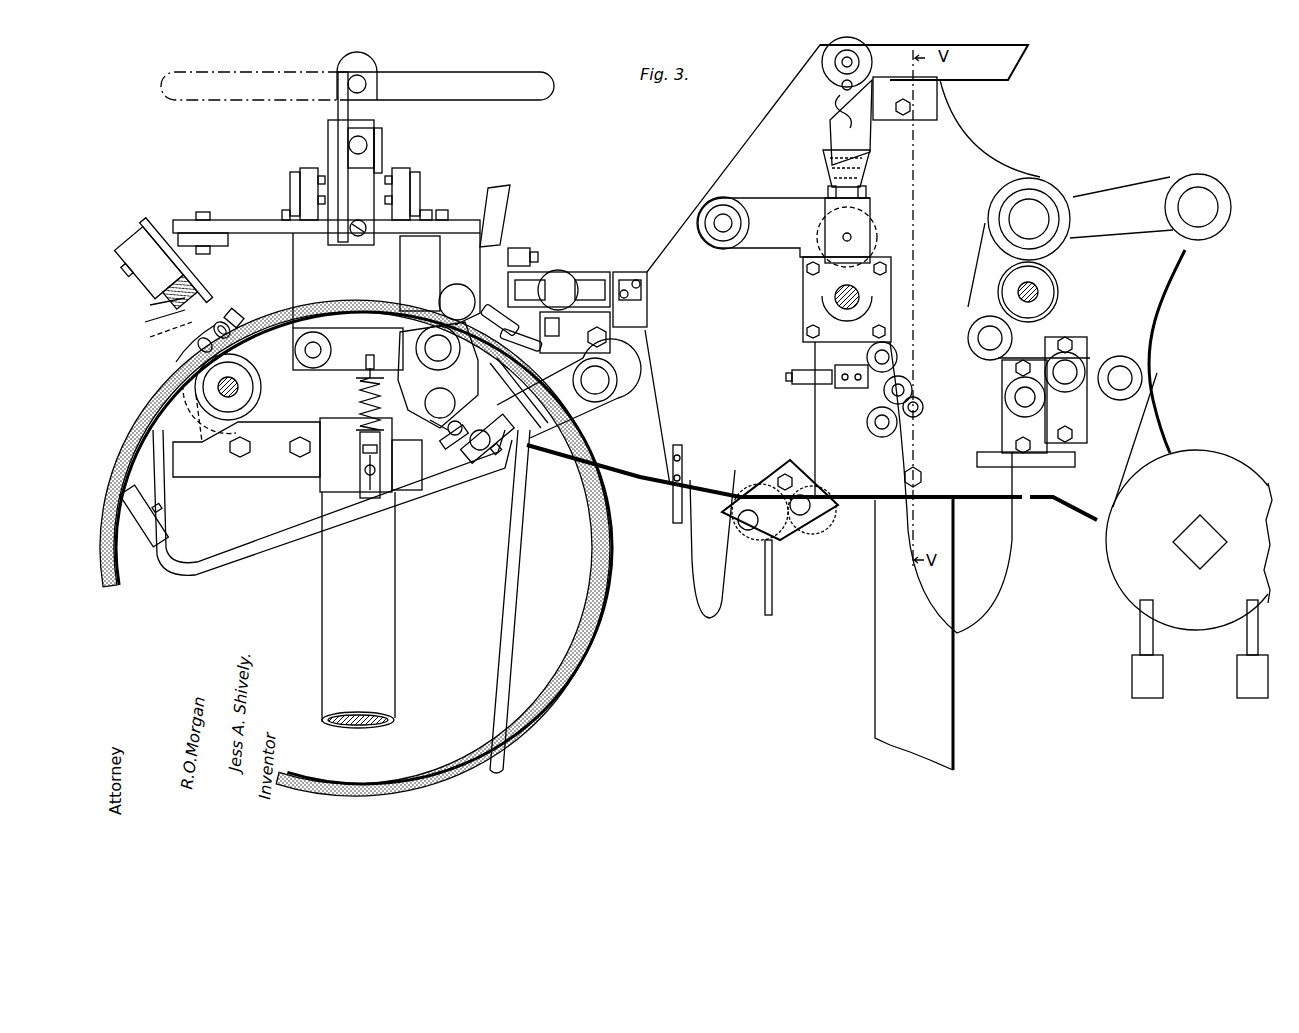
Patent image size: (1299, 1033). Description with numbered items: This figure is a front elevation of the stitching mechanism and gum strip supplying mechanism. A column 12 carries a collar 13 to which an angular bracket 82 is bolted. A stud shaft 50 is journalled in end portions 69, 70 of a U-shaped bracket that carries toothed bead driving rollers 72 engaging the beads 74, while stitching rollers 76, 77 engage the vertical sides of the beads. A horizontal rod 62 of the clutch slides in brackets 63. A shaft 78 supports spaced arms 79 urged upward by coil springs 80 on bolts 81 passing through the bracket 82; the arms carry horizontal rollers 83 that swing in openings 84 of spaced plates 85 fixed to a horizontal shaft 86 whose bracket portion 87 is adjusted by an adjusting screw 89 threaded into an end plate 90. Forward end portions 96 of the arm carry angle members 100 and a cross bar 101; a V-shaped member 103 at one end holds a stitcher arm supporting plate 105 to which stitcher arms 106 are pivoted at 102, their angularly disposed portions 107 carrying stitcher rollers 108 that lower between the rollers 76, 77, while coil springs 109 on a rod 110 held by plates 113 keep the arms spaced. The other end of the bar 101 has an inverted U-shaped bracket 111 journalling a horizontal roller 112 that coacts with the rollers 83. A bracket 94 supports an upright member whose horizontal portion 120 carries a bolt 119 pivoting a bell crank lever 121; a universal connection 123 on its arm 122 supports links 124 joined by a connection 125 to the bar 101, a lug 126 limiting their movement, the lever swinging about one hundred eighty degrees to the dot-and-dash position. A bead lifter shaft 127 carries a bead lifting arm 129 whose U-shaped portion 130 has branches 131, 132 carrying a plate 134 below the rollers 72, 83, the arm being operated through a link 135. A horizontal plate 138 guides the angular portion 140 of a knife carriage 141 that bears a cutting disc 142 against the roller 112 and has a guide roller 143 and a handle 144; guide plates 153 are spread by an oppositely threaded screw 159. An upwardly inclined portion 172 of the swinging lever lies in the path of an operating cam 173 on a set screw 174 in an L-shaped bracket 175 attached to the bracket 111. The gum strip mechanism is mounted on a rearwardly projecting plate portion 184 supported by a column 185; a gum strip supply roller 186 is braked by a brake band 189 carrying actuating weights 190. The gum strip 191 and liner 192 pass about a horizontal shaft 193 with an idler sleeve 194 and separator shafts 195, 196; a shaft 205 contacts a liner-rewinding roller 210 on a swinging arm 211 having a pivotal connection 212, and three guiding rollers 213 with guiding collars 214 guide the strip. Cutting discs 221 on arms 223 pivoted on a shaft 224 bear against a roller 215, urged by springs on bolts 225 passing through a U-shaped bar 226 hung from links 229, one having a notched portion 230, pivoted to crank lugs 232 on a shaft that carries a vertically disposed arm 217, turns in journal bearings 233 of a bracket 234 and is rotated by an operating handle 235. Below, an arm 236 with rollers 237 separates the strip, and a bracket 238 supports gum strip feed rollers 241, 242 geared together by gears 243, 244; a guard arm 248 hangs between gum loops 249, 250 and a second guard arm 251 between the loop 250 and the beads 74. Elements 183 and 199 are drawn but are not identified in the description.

The tubular post 12 is at (322, 635).
The block 13 is at (340, 485).
The shaft 50 is at (240, 386).
The roller 62 is at (476, 450).
The pin 63 is at (496, 452).
The bracket 69 is at (250, 467).
The roller 70 is at (242, 398).
The arm 72 is at (250, 370).
The ring 74 is at (606, 570).
The ring flange 76 is at (178, 364).
The pin 77 is at (236, 312).
The roller 78 is at (313, 358).
The block 79 is at (340, 326).
The spring 80 is at (362, 396).
The pin 81 is at (366, 360).
The plunger 82 is at (362, 460).
The pivot roller 83 is at (438, 326).
The pivot plate 84 is at (410, 345).
The roller 85 is at (440, 318).
The roller 86 is at (445, 400).
The link 87 is at (438, 422).
The pin 89 is at (451, 435).
The block 90 is at (440, 452).
The housing 94 is at (293, 270).
The post 96 is at (300, 185).
The nut 100 is at (310, 168).
The plate 101 is at (240, 220).
The pad 102 is at (130, 268).
The bracket 103 is at (178, 240).
The plate 105 is at (148, 228).
The block 106 is at (124, 242).
The roller 107 is at (197, 344).
The roller 108 is at (218, 322).
The line 109 is at (150, 337).
The line 110 is at (149, 323).
The slot 111 is at (462, 255).
The opening 112 is at (440, 296).
The line 113 is at (145, 310).
The pin 119 is at (366, 85).
The handle end 120 is at (357, 66).
The handle 121 is at (158, 70).
The bar 122 is at (348, 107).
The clamp 123 is at (348, 135).
The pin 124 is at (368, 150).
The screw 125 is at (358, 236).
The plate 126 is at (384, 170).
The roller 127 is at (603, 385).
The bracket 129 is at (580, 405).
The frame arm 130 is at (433, 494).
The rod 131 is at (585, 436).
The plate 132 is at (158, 540).
The frame 134 is at (170, 480).
The rod 135 is at (505, 568).
The bracket 138 is at (600, 305).
The roller 140 is at (558, 290).
The arm 141 is at (500, 312).
The arm 142 is at (521, 340).
The nut 143 is at (587, 340).
The pin 144 is at (553, 324).
The bracket 153 is at (642, 274).
The housing 159 is at (566, 284).
The arm 172 is at (510, 195).
The bracket 173 is at (516, 250).
The screw 174 is at (538, 262).
The clip 175 is at (536, 254).
The frame 183 is at (816, 445).
The frame arc 184 is at (996, 152).
The sheet 185 is at (955, 705).
The wheel 186 is at (1200, 530).
The leg 189 is at (1140, 630).
The foot 190 is at (1240, 677).
The nut 191 is at (1023, 385).
The bracket 192 is at (1002, 360).
The roller 193 is at (1118, 372).
The roller 194 is at (1142, 378).
The bracket 195 is at (1070, 378).
The roller 196 is at (1015, 400).
The roller 199 is at (968, 345).
The roller 205 is at (1040, 292).
The roller 210 is at (1040, 200).
The link 211 is at (1125, 200).
The roller 212 is at (1210, 200).
The roller 213 is at (867, 356).
The roller 214 is at (893, 360).
The plate 215 is at (892, 290).
The disc 217 is at (838, 80).
The block 221 is at (872, 228).
The arm 223 is at (758, 198).
The roller 224 is at (830, 186).
The bolt 225 is at (866, 190).
The spring housing 226 is at (872, 150).
The arm 229 is at (872, 128).
The hook 230 is at (840, 110).
The roller 232 is at (872, 62).
The bracket 233 is at (905, 98).
The pin 234 is at (854, 86).
The bar 235 is at (1010, 66).
The block 236 is at (845, 390).
The rod 237 is at (800, 384).
The bar 238 is at (765, 552).
The gear 241 is at (826, 528).
The pin 242 is at (792, 542).
The plate 243 is at (835, 512).
The gear 244 is at (735, 512).
The rod end 248 is at (772, 612).
The loop 249 is at (1010, 578).
The loop 250 is at (713, 618).
The bar 251 is at (676, 518).